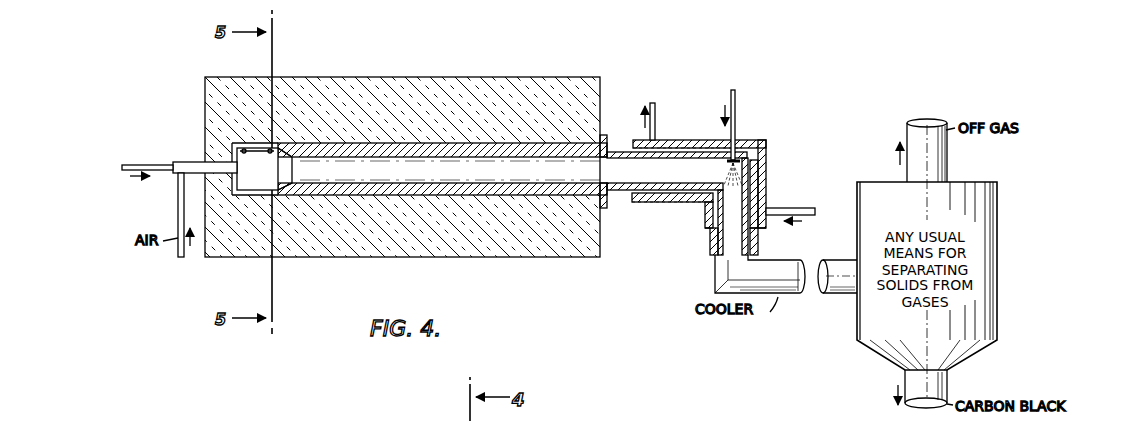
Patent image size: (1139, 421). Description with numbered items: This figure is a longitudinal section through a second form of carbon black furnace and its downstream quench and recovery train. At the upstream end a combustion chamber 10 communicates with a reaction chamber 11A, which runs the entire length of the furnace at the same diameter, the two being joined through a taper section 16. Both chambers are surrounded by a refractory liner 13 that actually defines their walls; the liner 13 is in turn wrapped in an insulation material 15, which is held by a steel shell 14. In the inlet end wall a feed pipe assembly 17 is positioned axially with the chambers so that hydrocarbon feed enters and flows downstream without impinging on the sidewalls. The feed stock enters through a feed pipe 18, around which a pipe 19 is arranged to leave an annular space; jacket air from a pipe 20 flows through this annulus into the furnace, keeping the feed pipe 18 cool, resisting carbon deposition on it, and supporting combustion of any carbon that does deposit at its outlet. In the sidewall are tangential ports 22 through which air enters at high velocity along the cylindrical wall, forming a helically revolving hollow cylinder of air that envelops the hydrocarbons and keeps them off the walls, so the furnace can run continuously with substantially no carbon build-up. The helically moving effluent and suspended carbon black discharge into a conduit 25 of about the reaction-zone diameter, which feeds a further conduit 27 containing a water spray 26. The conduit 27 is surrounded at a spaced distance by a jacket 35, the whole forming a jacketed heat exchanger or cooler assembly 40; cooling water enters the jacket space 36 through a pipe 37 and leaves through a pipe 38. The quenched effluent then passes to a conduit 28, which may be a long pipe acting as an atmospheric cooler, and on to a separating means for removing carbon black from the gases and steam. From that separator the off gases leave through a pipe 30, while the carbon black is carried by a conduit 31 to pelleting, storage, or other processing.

The combustion chamber 10 is at (291, 165).
The reaction chamber 11A is at (494, 158).
The refractory liner 13 is at (352, 151).
The steel shell 14 is at (527, 79).
The insulation material 15 is at (398, 92).
The taper section 16 is at (285, 156).
The feed pipe assembly 17 is at (151, 157).
The feed pipe 18 is at (128, 163).
The pipe 19 is at (191, 160).
The pipe 20 is at (178, 220).
The tangential ports 22 is at (270, 153).
The conduit 25 is at (624, 151).
The water spray 26 is at (727, 165).
The conduit 27 is at (680, 159).
The conduit 28 is at (829, 262).
The pipe 30 is at (948, 154).
The conduit 31 is at (947, 390).
The jacket 35 is at (746, 146).
The jacket space 36 is at (766, 170).
The pipe 37 is at (786, 210).
The pipe 38 is at (659, 115).
The cooler assembly 40 is at (698, 219).